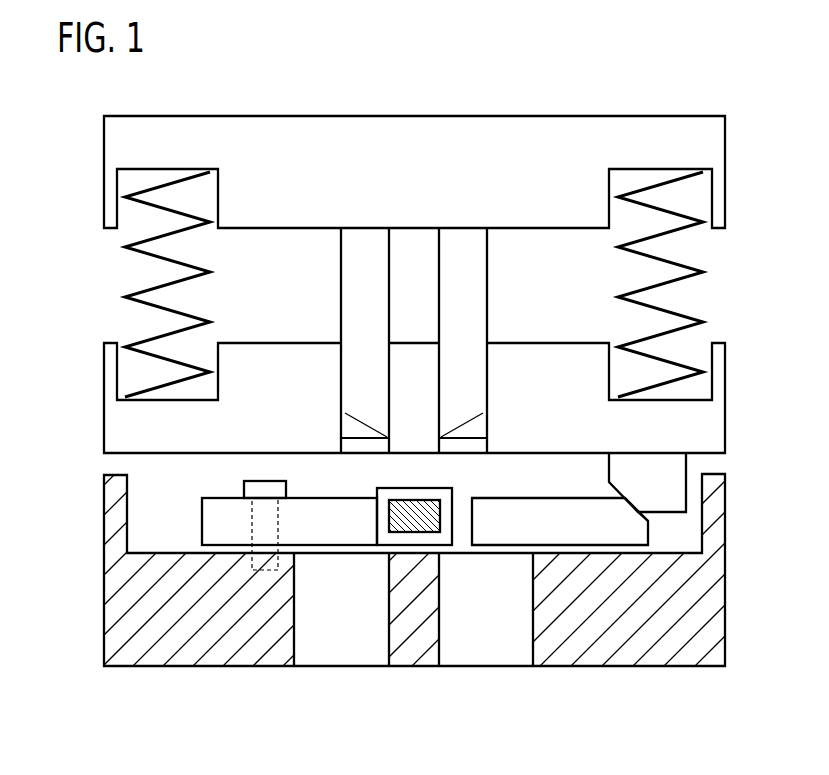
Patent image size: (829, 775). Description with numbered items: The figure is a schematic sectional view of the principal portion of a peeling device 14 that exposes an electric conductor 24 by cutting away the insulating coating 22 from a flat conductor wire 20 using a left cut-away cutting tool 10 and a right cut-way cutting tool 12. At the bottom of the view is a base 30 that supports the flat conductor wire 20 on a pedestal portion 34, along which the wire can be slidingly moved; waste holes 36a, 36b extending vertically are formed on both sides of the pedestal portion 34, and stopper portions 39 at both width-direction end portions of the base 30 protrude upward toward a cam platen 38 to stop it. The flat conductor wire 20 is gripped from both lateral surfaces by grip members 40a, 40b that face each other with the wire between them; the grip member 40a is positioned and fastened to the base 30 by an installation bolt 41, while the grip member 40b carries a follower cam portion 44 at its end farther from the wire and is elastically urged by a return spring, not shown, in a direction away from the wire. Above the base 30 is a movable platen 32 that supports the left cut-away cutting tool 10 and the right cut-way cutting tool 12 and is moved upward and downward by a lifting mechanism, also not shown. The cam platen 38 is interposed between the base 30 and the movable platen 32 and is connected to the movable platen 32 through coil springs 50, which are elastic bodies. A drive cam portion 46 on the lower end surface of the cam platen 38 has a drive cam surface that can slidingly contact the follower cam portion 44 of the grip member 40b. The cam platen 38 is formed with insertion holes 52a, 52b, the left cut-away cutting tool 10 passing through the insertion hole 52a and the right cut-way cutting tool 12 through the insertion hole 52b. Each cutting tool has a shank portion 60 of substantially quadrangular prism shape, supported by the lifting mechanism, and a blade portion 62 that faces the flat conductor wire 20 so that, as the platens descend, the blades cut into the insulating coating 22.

The peeling device 14 is at (694, 55).
The movable platen 32 is at (727, 137).
The coil spring 50 is at (135, 292).
The cam platen 38 is at (717, 377).
The left cut-away cutting tool 10 is at (352, 213).
The right cut-way cutting tool 12 is at (488, 213).
The shank portion 60 is at (351, 281).
The insertion hole 52a is at (340, 354).
The insertion hole 52b is at (490, 354).
The blade portion 62 is at (352, 430).
The base 30 is at (414, 575).
The stopper portion 39 is at (717, 503).
The pedestal portion 34 is at (408, 657).
The waste hole 36a is at (294, 647).
The waste hole 36b is at (533, 648).
The grip member 40a is at (316, 508).
The installation bolt 41 is at (265, 488).
The grip member 40b is at (557, 506).
The flat conductor wire 20 is at (486, 553).
The insulating coating 22 is at (395, 487).
The electric conductor 24 is at (414, 505).
The drive cam portion 46 is at (647, 470).
The follower cam portion 44 is at (635, 506).